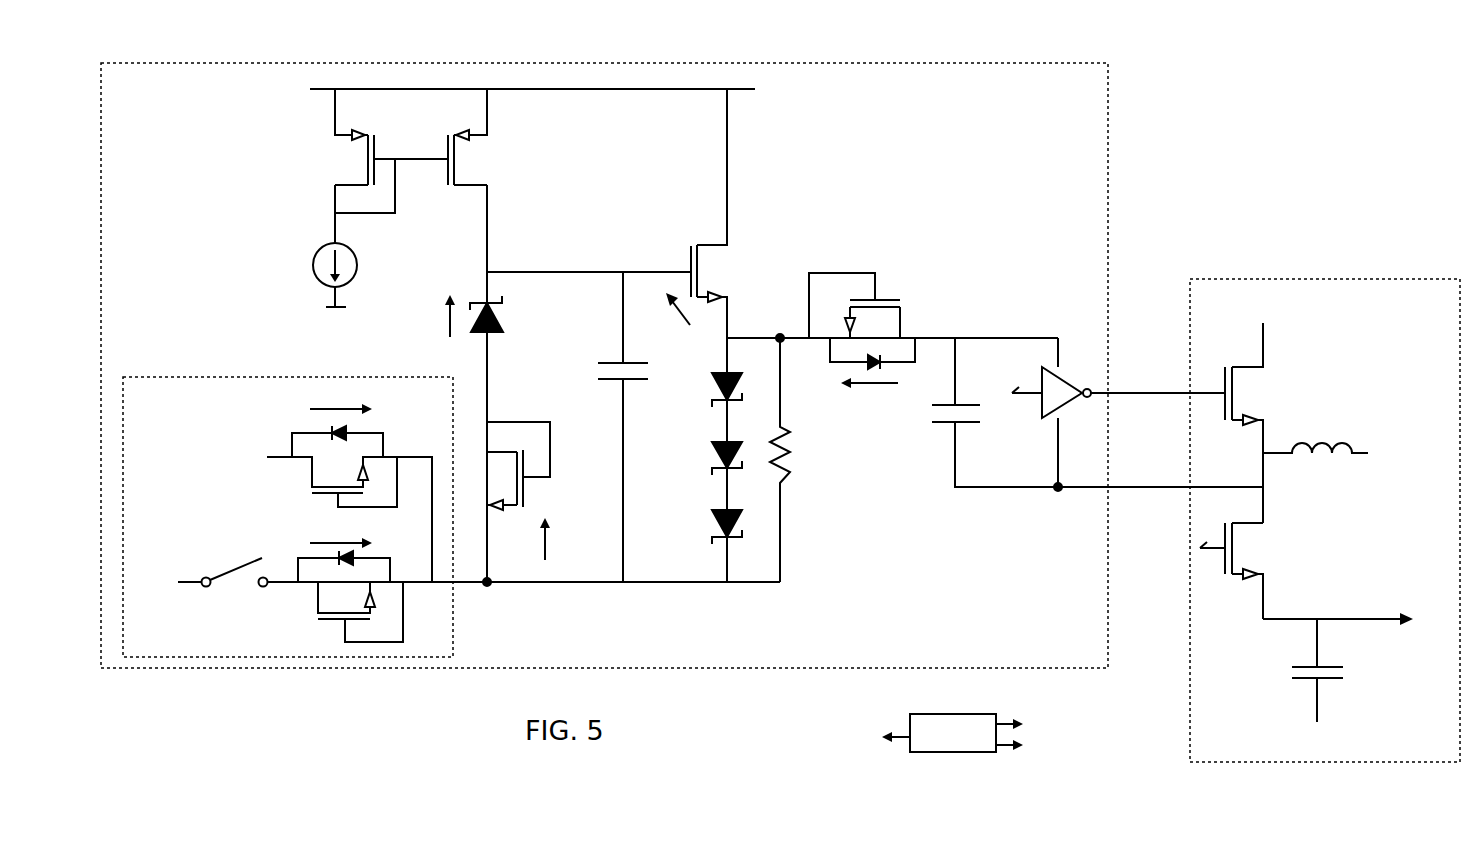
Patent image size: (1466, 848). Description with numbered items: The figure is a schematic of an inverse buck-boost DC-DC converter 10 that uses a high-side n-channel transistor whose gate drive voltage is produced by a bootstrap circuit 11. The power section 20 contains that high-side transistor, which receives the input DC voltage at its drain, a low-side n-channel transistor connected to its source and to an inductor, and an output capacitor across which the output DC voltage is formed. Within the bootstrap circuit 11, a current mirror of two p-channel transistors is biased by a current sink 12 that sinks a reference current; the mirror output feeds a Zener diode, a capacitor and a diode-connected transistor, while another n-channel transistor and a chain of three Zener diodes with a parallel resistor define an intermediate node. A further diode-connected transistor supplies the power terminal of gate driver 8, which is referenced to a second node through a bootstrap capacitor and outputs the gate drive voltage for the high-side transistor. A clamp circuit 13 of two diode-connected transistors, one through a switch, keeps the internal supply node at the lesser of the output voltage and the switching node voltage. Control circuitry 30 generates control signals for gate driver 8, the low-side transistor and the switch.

The gate driver 8 is at (1063, 402).
The DC-DC converter 10 is at (1268, 178).
The bootstrap circuit 11 is at (158, 63).
The current sink 12 is at (315, 249).
The clamp circuit 13 is at (161, 377).
The power section 20 is at (1392, 279).
The control circuitry 30 is at (934, 714).